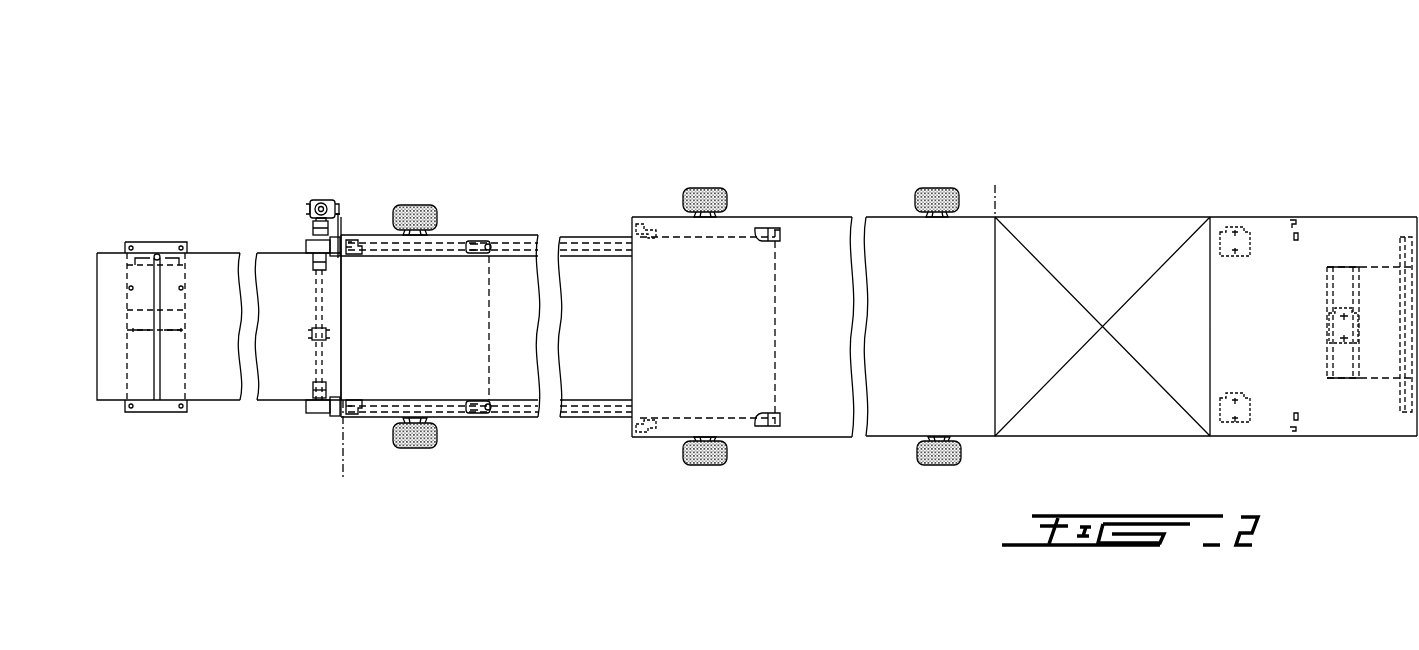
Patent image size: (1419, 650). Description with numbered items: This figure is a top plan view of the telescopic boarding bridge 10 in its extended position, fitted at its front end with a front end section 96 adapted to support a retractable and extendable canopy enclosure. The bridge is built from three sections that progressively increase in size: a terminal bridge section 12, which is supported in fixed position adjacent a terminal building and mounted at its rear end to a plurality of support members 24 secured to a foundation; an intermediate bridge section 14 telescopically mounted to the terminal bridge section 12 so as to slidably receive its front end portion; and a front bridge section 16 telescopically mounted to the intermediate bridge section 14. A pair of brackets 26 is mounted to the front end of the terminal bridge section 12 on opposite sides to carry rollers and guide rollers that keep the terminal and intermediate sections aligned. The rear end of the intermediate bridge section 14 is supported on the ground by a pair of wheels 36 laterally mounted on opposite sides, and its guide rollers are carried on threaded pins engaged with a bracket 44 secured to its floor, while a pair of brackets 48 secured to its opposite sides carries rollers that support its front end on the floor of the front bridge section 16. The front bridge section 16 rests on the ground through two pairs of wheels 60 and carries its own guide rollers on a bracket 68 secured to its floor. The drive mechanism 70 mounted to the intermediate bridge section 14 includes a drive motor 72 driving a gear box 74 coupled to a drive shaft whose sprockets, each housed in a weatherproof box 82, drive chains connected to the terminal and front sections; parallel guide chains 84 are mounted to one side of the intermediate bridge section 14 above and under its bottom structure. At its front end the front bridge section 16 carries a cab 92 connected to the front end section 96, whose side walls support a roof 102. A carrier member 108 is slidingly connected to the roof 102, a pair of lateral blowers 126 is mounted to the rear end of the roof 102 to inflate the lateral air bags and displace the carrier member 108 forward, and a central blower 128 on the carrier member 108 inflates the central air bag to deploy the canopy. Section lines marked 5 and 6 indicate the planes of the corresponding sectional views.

The telescopic boarding bridge 10 is at (1052, 150).
The terminal bridge section 12 is at (207, 250).
The intermediate bridge section 14 is at (534, 233).
The front bridge section 16 is at (838, 215).
The support members 24 is at (168, 246).
The brackets 26 is at (497, 250).
The wheels 36 is at (430, 207).
The bracket 44 is at (356, 243).
The brackets 48 is at (775, 227).
The wheels 60 is at (705, 205).
The bracket 68 is at (645, 222).
The drive mechanism 70 is at (311, 199).
The drive motor 72 is at (334, 205).
The gear box 74 is at (312, 230).
The weatherproof boxes 82 is at (306, 246).
The guide chains 84 is at (458, 250).
The cab 92 is at (1094, 212).
The front end section 96 is at (1288, 214).
The roof 102 is at (1290, 336).
The carrier member 108 is at (1378, 263).
The lateral blowers 126 is at (1233, 222).
The central blower 128 is at (1336, 390).
The section line 5- 5 is at (978, 173).
The section line 6- 6 is at (364, 357).